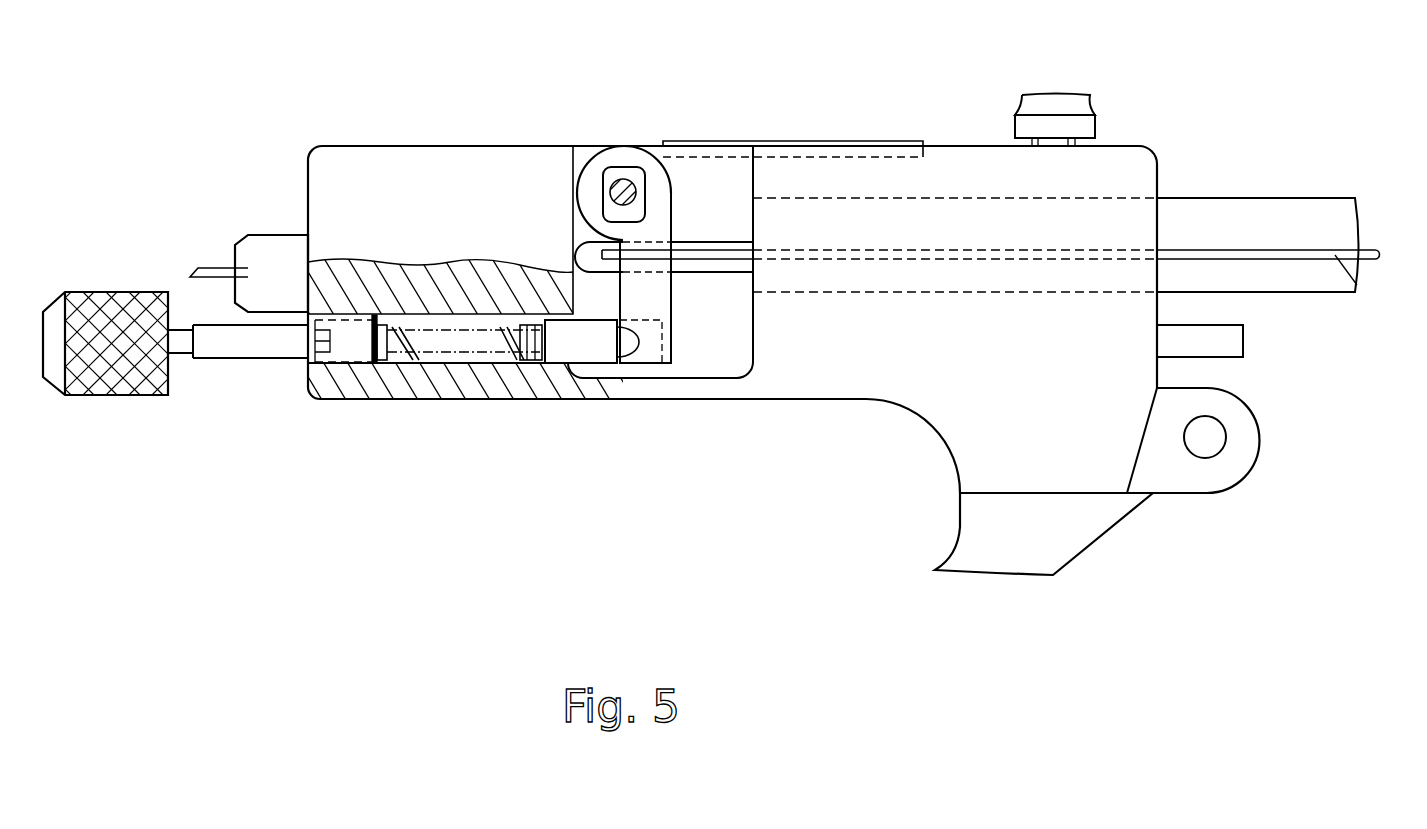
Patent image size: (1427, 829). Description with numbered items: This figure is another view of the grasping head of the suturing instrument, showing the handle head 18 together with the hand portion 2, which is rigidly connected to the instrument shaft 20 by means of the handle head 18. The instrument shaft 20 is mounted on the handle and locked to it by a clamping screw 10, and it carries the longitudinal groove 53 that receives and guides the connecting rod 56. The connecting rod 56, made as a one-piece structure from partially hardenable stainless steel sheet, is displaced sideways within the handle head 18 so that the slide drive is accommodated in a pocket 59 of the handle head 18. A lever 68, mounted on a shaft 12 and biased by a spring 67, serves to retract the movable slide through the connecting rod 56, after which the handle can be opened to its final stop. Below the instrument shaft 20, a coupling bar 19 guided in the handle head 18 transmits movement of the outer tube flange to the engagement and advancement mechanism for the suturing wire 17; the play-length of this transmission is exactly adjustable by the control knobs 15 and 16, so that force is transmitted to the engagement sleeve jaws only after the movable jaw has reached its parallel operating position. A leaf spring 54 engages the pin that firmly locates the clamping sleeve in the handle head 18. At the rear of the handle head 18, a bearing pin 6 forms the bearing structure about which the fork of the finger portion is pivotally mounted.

The hand portion 2 is at (1063, 540).
The bearing pin 6 is at (1225, 468).
The clamping screw 10 is at (1028, 130).
The shaft 12 is at (628, 173).
The control knob 15 is at (281, 250).
The control knob 16 is at (122, 305).
The suturing wire 17 is at (210, 272).
The handle head 18 is at (868, 377).
The coupling bar 19 is at (260, 350).
The instrument shaft 20 is at (1232, 222).
The longitudinal groove 53 is at (1335, 255).
The leaf spring 54 is at (677, 143).
The connecting rod 56 is at (727, 253).
The pocket 59 is at (685, 353).
The spring 67 is at (413, 355).
The lever 68 is at (590, 180).